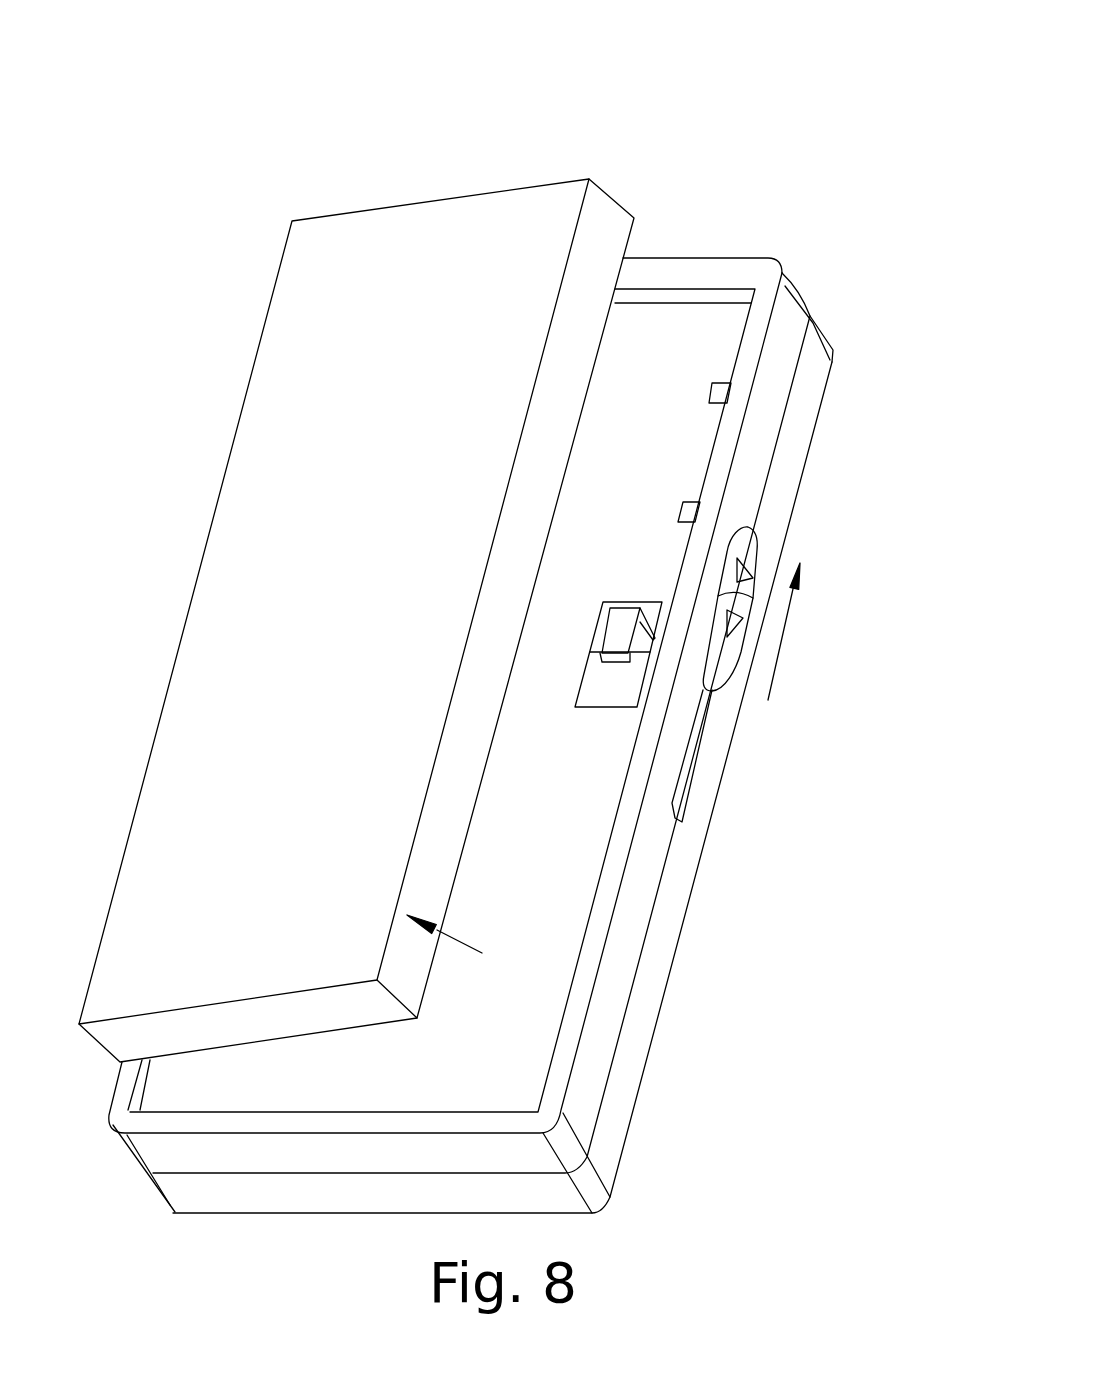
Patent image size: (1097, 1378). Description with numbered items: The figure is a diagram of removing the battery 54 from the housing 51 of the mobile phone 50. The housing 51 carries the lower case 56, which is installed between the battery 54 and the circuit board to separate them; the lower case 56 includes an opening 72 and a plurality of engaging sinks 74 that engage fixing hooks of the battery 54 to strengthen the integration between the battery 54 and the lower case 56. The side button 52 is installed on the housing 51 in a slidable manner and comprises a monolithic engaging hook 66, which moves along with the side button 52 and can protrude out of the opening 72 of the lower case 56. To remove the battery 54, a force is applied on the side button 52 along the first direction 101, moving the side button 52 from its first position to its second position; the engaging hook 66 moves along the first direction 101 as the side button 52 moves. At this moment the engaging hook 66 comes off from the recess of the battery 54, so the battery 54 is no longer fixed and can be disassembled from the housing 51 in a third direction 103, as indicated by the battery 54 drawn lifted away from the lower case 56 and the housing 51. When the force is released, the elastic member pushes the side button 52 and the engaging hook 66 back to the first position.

The mobile phone 50 is at (498, 608).
The housing 51 is at (513, 693).
The side button 52 is at (722, 660).
The battery 54 is at (458, 207).
The lower case 56 is at (687, 283).
The engaging hook 66 is at (628, 618).
The opening 72 is at (600, 697).
The engaging sinks 74 is at (723, 393).
The first direction 101 is at (790, 622).
The third direction 103 is at (478, 950).